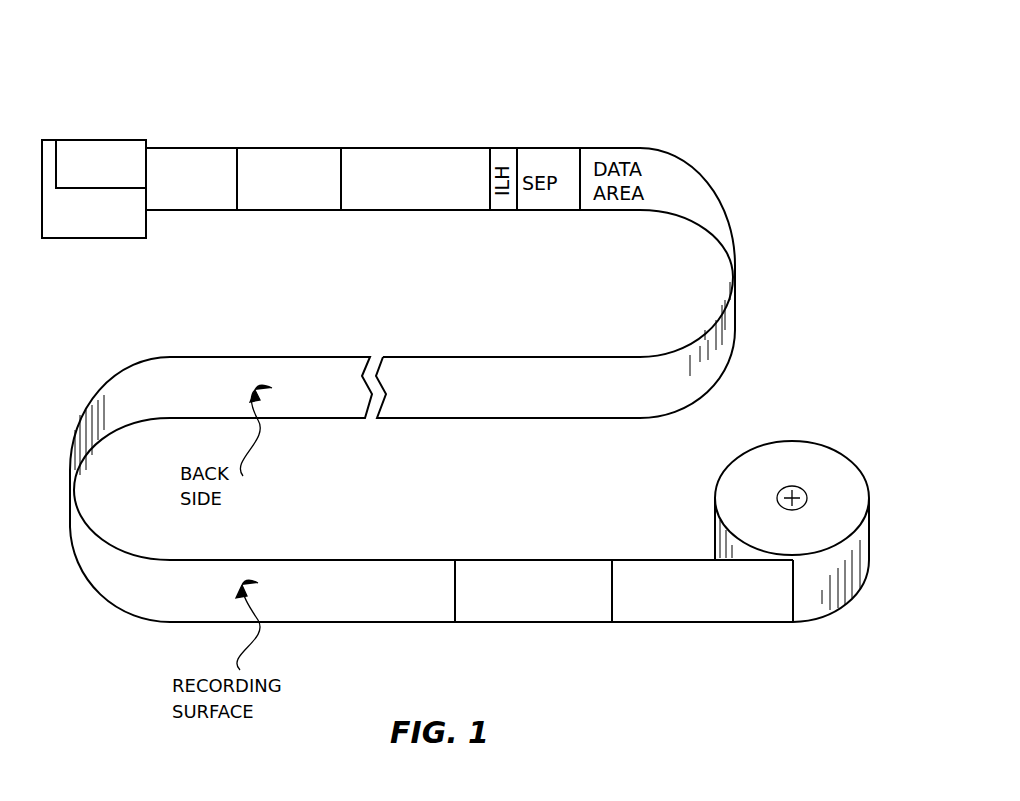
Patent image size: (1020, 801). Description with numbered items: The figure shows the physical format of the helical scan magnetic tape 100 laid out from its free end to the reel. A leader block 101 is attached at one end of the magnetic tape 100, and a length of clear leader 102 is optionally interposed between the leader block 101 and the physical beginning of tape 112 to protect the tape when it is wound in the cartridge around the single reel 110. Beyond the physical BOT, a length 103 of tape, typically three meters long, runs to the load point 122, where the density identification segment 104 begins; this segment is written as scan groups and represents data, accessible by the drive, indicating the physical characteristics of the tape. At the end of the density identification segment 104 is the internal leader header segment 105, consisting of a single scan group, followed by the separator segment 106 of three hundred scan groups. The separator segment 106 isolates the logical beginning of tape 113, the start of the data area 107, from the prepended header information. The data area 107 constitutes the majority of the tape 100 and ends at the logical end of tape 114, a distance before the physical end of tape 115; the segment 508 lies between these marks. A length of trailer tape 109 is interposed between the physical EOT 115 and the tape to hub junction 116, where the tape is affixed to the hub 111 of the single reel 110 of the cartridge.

The magnetic tape 100 is at (430, 421).
The leader block 101 is at (92, 140).
The clear leader 102 is at (176, 192).
The length of tape 103 is at (284, 192).
The density identification segment 104 is at (428, 193).
The internal leader header segment 105 is at (505, 205).
The separator segment 106 is at (580, 148).
The data area 107 is at (526, 393).
The trailer tape 109 is at (728, 602).
The single reel 110 is at (822, 471).
The hub center 111 is at (791, 484).
The physical beginning of tape 112 is at (238, 147).
The logical beginning of tape 113 is at (541, 147).
The logical EOT 114 is at (455, 558).
The logical end of tape 115 is at (612, 558).
The tape to hub junction 116 is at (795, 624).
The load point 122 is at (342, 148).
The tape segment between logical EOT and physical EOT 508 is at (553, 602).